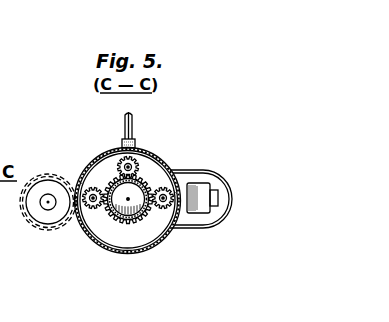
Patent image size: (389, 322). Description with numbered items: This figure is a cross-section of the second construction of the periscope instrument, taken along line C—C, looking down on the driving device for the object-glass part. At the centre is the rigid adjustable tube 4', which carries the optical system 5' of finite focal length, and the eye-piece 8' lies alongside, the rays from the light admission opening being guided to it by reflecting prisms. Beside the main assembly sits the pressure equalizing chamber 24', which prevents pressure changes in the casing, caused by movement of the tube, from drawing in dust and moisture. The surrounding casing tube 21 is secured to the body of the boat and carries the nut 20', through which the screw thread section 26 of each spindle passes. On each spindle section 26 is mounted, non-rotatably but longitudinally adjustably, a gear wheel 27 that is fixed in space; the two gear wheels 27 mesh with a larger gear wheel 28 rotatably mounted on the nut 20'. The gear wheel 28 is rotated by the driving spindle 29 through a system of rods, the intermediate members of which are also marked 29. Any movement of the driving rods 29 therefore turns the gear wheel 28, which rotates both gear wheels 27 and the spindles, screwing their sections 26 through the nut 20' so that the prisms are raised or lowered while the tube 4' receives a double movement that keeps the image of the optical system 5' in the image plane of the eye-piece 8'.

The rigid adjustable tube 4' is at (157, 170).
The optical system 5' is at (151, 221).
The eye-piece 8' is at (214, 199).
The nut 20' is at (114, 211).
The casing tube 21 is at (121, 250).
The pressure equalizing chamber 24' is at (39, 223).
The screw thread section 26 is at (80, 182).
The gear wheel 27 is at (93, 196).
The gear wheel 28 is at (143, 221).
The driving spindle 29 is at (133, 160).